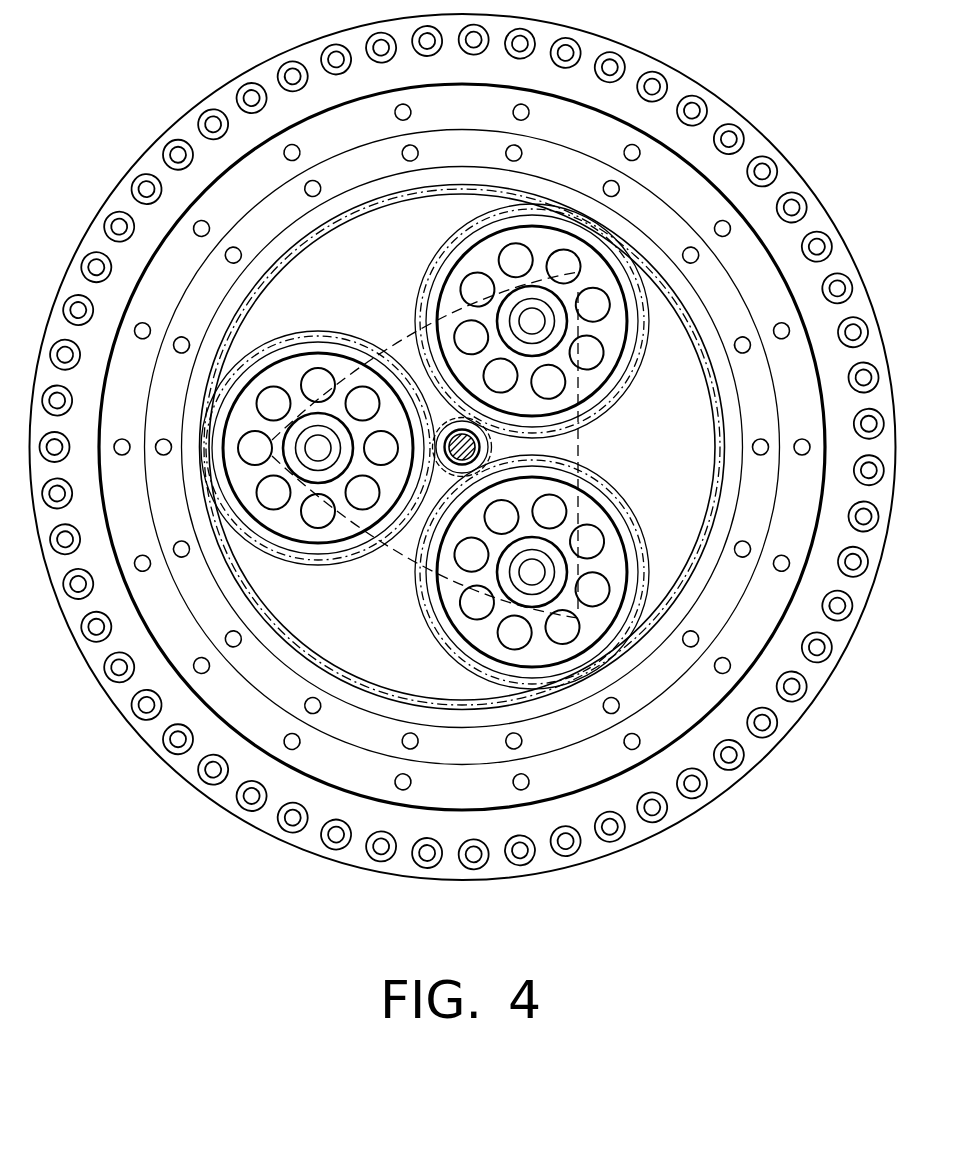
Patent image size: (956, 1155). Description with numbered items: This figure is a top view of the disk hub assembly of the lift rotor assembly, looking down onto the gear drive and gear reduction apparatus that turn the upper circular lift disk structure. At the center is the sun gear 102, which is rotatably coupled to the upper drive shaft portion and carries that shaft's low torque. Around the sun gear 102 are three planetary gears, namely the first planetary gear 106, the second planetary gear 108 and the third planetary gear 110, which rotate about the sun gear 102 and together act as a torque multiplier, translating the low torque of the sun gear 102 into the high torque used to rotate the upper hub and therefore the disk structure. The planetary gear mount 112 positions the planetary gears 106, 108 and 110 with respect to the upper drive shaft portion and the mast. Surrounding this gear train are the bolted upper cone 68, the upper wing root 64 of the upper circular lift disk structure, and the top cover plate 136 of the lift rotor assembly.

The upper wing root 64 is at (633, 111).
The top cover plate 136 is at (600, 139).
The upper cone 68 is at (256, 272).
The sun gear 102 is at (492, 447).
The first planetary gear 106 is at (336, 562).
The second planetary gear 108 is at (458, 647).
The third planetary gear 110 is at (441, 258).
The planetary gear mount 112 is at (413, 347).